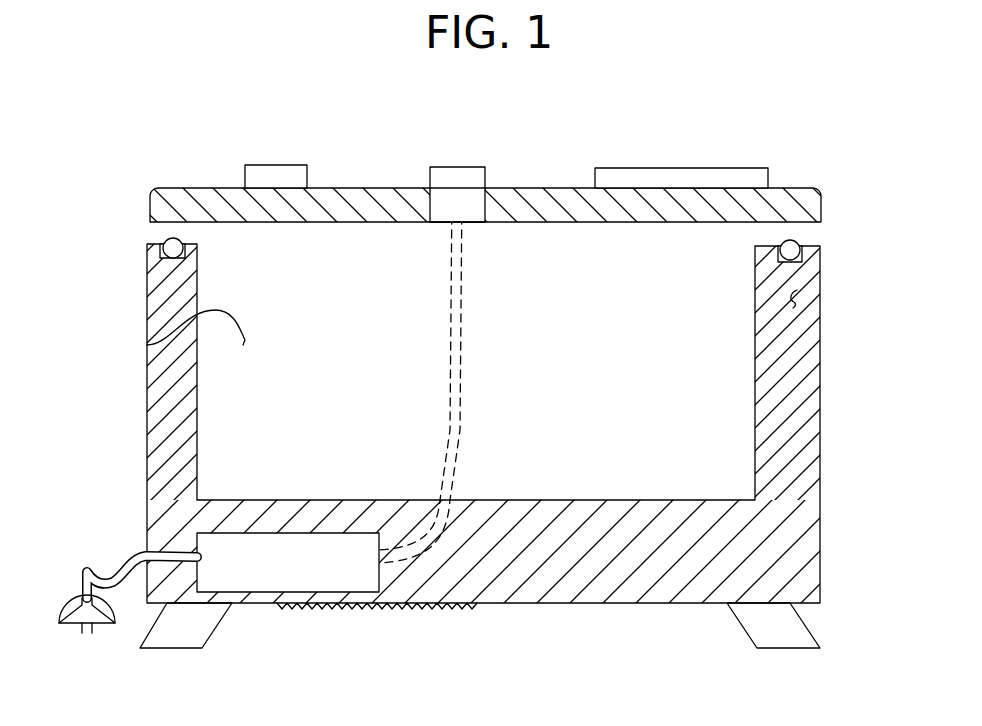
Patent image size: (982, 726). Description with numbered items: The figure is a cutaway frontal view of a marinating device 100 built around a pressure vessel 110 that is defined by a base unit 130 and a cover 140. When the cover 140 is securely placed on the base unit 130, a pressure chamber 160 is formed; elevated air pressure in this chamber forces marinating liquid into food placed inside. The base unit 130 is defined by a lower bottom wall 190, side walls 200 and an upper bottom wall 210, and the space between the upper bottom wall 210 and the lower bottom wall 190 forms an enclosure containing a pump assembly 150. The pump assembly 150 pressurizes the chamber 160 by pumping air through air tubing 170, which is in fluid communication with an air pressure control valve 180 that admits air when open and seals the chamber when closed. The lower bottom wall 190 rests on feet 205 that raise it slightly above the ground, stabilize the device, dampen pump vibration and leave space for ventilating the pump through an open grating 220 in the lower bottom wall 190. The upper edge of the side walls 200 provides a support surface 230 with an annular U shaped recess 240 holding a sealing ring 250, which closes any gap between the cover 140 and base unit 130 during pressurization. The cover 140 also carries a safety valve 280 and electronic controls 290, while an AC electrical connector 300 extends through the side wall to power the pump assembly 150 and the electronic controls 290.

The marinating device 100 is at (814, 182).
The pressure vessel 110 is at (478, 458).
The base unit 130 is at (797, 291).
The cover 140 is at (149, 197).
The pump assembly 150 is at (197, 535).
The pressure chamber 160 is at (147, 345).
The air tubing 170 is at (449, 449).
The air pressure control valve 180 is at (458, 167).
The lower bottom wall 190 is at (553, 604).
The side walls 200 is at (147, 401).
The feet 205 is at (173, 649).
The upper bottom wall 210 is at (625, 500).
The open grating 220 is at (350, 609).
The support surface 230 is at (158, 243).
The U shaped recess 240 is at (165, 258).
The sealing ring 250 is at (163, 239).
The safety valve 280 is at (275, 165).
The electronic controls 290 is at (660, 168).
The AC electrical connector 300 is at (60, 616).